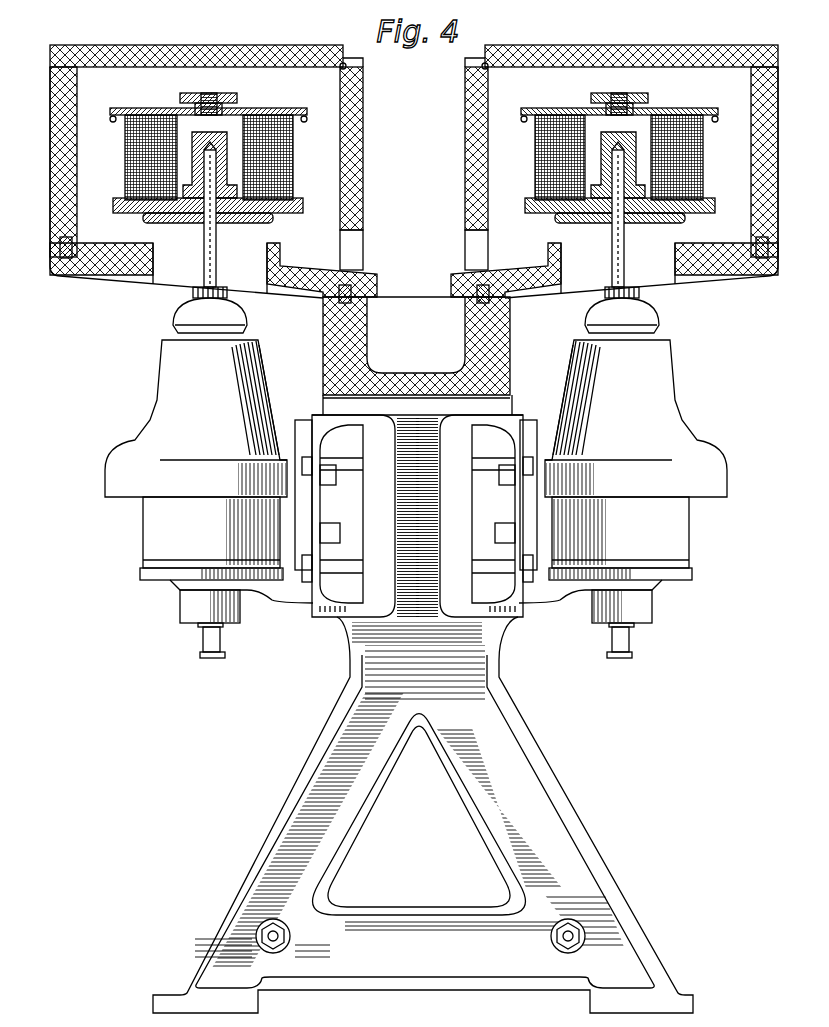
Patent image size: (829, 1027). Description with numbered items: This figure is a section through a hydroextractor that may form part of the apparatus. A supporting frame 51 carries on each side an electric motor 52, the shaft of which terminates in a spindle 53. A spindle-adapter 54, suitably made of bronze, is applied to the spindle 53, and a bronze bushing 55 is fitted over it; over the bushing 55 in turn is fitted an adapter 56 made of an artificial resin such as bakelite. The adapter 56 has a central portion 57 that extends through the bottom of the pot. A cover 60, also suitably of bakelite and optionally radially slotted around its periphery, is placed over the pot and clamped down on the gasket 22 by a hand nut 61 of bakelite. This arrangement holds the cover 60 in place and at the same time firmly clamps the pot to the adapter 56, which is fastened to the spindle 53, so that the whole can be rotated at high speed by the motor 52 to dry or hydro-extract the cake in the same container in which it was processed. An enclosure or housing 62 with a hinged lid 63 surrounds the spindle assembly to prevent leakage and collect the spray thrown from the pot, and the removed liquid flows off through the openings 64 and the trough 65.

The gasket 22 is at (115, 122).
The supporting frame 51 is at (505, 722).
The electric motor 52 is at (158, 398).
The spindle 53 is at (200, 285).
The spindle-adapter 54 is at (260, 223).
The bronze bushing 55 is at (222, 163).
The adapter 56 is at (127, 203).
The central portion 57 is at (203, 157).
The cover 60 is at (247, 110).
The hand nut 61 is at (180, 97).
The enclosure or housing 62 is at (55, 110).
The hinged lid 63 is at (135, 45).
The openings 64 is at (462, 257).
The trough 65 is at (416, 347).